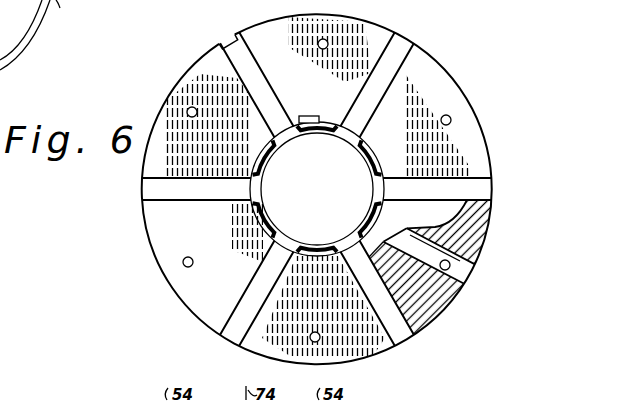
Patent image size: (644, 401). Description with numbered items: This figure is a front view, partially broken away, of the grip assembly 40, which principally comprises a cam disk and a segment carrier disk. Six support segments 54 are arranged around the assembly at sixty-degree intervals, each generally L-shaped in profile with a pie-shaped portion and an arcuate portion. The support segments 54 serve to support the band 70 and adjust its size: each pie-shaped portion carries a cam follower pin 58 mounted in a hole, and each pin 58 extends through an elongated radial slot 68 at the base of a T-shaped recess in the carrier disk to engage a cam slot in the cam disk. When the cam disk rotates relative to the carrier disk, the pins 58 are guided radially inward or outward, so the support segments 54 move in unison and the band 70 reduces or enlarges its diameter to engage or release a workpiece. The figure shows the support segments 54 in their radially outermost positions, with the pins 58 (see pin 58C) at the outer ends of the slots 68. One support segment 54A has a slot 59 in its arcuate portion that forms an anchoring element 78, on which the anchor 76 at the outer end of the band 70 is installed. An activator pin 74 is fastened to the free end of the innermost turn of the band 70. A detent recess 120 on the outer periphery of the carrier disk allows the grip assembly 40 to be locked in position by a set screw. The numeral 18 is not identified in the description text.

The adjacent figure element 18 is at (72, 8).
The grip assembly 40 is at (443, 63).
The detent recess 120 is at (227, 40).
The support segment 54 is at (165, 117).
The support segment 54A is at (273, 34).
The activator pin 74 is at (289, 262).
The cam follower pin 58 is at (327, 41).
The anchoring element 78 is at (285, 128).
The slot 59 is at (328, 124).
The band 70 is at (258, 227).
The anchor 76 is at (309, 116).
The elongated radial slot 68 is at (477, 258).
The cam follower pin 58C is at (467, 292).